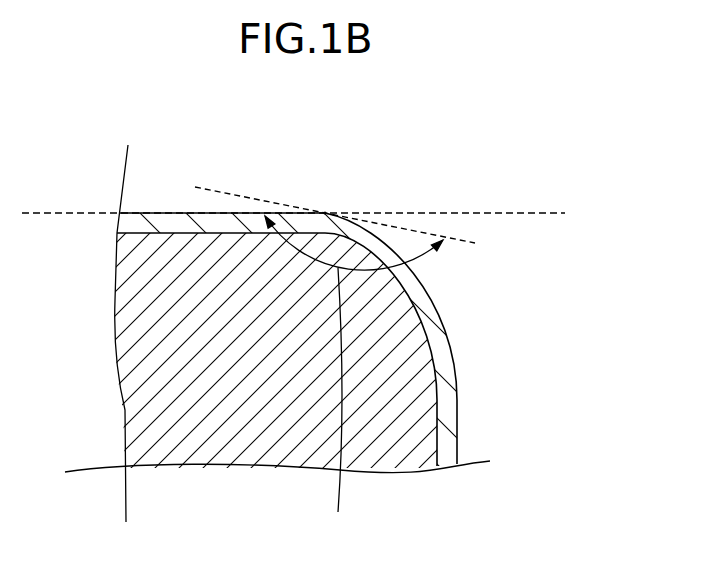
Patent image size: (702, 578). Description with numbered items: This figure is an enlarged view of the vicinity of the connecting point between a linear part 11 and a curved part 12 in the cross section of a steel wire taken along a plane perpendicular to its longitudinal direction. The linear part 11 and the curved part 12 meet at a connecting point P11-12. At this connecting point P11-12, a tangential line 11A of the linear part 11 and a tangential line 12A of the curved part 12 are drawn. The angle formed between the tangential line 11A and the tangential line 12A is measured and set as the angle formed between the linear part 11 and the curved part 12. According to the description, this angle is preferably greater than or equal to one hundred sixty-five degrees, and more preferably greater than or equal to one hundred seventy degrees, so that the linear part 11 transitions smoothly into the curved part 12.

The linear part 11 is at (176, 201).
The curved part 12 is at (458, 337).
The tangential line of the linear part 11A is at (535, 213).
The tangential line of the curved part 12A is at (225, 190).
The connecting point P11-12 is at (334, 202).